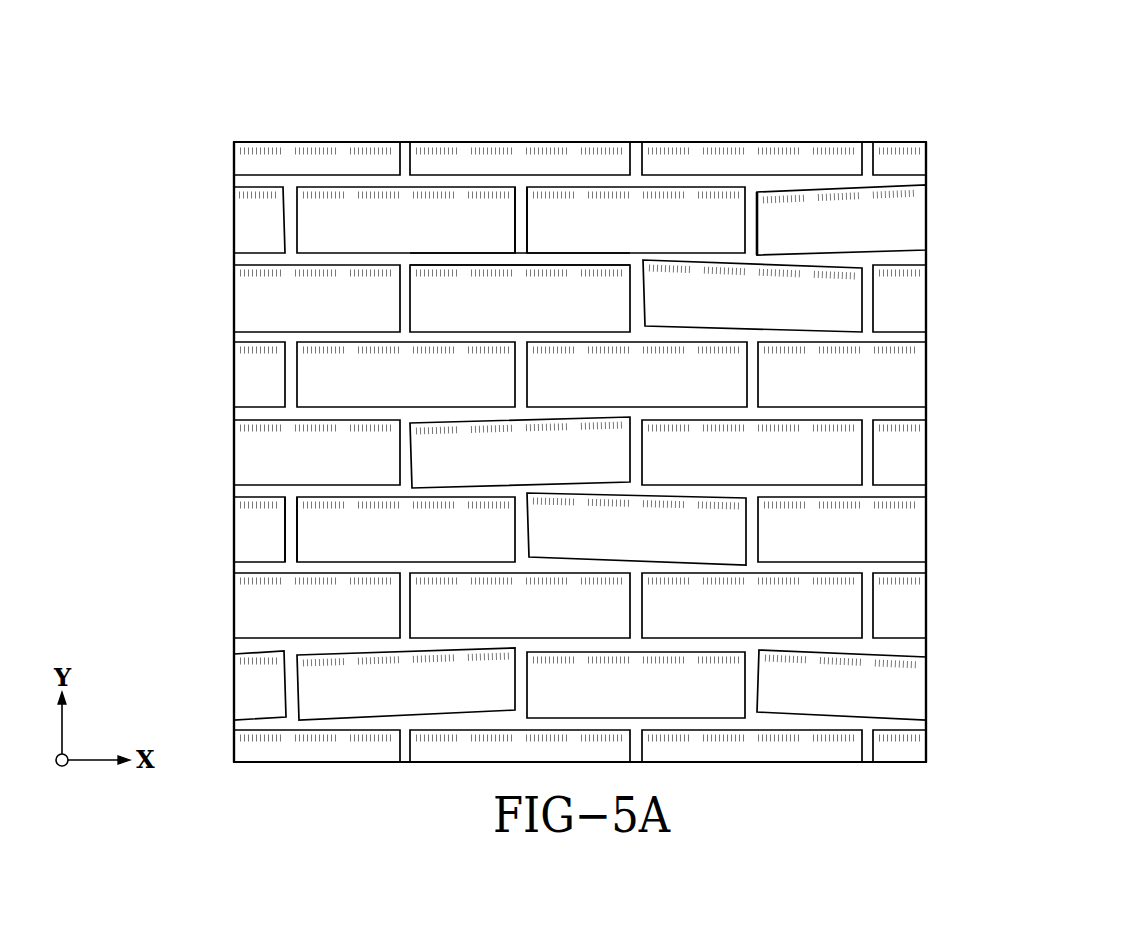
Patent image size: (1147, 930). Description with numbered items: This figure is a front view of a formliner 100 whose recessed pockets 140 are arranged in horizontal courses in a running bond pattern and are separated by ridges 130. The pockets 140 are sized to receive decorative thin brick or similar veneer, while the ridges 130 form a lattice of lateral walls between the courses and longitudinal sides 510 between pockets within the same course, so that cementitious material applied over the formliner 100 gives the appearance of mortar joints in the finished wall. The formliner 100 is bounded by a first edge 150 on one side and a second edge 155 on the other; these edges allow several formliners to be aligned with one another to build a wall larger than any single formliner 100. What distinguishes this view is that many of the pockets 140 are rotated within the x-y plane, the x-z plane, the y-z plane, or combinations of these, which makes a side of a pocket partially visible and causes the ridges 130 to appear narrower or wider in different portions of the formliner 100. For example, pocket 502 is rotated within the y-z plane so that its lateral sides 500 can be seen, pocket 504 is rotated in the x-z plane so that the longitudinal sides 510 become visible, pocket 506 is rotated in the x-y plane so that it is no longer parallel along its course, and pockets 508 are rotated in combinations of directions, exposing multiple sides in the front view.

The formliner 100 is at (997, 101).
The ridges 130 is at (595, 263).
The recessed pockets 140 is at (360, 198).
The first edge 150 is at (926, 442).
The second edge 155 is at (235, 447).
The lateral sides 500 is at (741, 265).
The pocket rotated within the y-z plane 502 is at (661, 232).
The pocket rotated in the x-z plane 504 is at (323, 310).
The pocket rotated in the x-y plane 506 is at (886, 387).
The pockets rotated in combinations of directions 508 is at (886, 232).
The longitudinal sides 510 is at (757, 232).